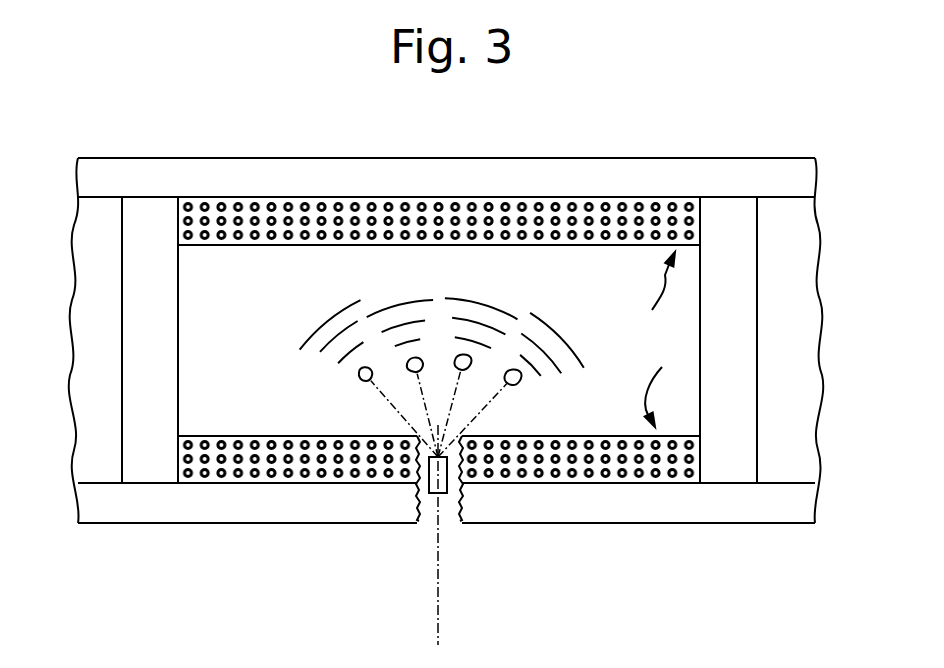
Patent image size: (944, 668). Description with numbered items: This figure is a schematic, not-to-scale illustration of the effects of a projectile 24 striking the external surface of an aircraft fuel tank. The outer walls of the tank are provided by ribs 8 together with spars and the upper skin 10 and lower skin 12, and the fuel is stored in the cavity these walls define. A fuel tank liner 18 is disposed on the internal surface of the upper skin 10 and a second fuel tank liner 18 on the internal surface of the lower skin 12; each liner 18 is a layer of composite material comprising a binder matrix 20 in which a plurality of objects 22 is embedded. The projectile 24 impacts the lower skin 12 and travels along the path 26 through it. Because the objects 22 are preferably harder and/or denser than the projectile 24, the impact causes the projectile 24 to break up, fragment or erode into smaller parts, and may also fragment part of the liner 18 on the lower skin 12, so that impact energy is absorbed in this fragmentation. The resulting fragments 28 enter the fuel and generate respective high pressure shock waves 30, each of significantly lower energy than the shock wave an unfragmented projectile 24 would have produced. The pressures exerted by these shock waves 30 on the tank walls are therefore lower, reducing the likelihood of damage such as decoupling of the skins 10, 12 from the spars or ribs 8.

The ribs 8 is at (138, 337).
The upper skin 10 is at (708, 165).
The lower skin 12 is at (160, 503).
The fuel tank liner 18 is at (654, 339).
The binder matrix 20 is at (262, 202).
The objects 22 is at (320, 205).
The projectile 24 is at (435, 492).
The path of the projectile 26 is at (437, 628).
The fragments 28 is at (355, 375).
The shock waves 30 is at (322, 318).